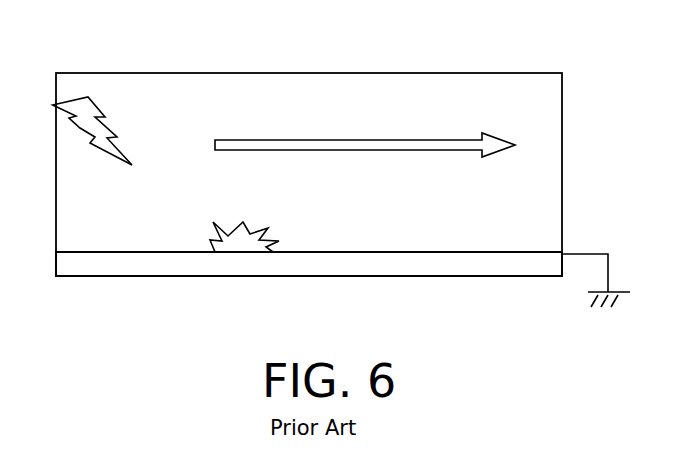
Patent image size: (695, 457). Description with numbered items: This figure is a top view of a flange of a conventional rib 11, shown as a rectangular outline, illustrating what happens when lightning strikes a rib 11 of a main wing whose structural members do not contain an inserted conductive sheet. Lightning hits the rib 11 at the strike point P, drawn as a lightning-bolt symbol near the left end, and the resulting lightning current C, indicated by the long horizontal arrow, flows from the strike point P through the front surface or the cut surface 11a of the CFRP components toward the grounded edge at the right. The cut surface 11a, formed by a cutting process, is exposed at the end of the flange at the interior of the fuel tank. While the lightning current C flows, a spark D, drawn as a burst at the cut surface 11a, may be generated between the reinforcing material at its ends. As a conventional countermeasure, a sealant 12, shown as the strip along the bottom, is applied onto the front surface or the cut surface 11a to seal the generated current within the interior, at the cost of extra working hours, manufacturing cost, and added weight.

The rib 11 is at (438, 70).
The cut surface 11a is at (142, 253).
The sealant 12 is at (195, 277).
The strike point P is at (84, 127).
The lightning current C is at (354, 143).
The spark D is at (244, 253).